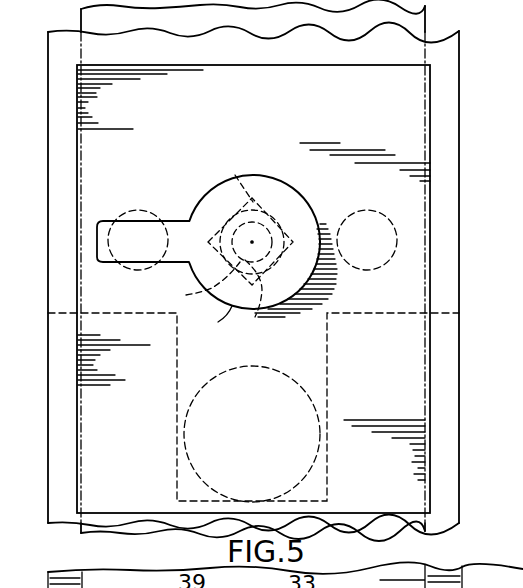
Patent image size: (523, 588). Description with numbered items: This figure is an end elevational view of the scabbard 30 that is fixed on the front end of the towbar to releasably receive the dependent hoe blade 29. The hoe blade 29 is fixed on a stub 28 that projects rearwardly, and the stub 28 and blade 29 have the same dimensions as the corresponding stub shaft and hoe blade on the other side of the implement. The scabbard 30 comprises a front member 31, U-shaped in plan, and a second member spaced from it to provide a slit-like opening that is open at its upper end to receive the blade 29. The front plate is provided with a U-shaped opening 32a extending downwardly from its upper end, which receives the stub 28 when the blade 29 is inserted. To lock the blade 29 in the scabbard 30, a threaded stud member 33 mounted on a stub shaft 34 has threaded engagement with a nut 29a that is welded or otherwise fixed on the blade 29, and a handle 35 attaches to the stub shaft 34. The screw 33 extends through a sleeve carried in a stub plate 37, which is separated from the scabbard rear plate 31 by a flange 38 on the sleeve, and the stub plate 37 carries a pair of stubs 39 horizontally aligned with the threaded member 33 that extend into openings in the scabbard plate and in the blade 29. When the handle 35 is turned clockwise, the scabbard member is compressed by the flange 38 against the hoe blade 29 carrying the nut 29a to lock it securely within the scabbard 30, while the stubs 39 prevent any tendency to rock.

The stub 28 is at (182, 437).
The hoe blade 29 is at (280, 28).
The nut 29a is at (236, 176).
The scabbard 30 is at (47, 460).
The front member 31 is at (436, 500).
The U-shaped opening 32a is at (320, 372).
The threaded stud member 33 is at (210, 288).
The stub shaft 34 is at (214, 326).
The handle 35 is at (104, 262).
The stub plate 37 is at (335, 127).
The flange 38 is at (258, 316).
The stubs 39 is at (133, 211).